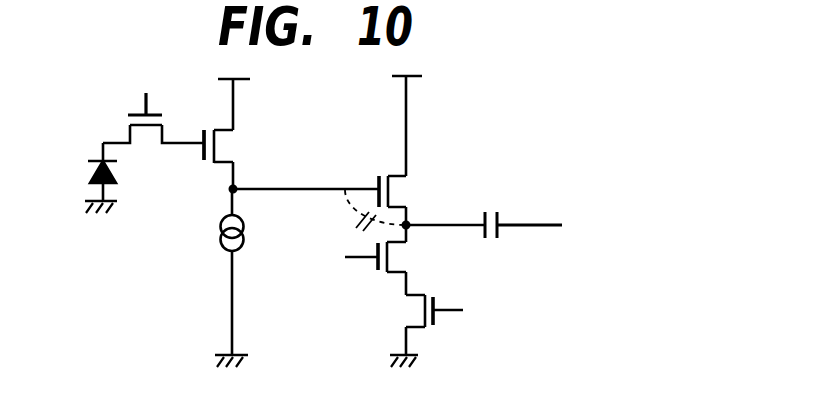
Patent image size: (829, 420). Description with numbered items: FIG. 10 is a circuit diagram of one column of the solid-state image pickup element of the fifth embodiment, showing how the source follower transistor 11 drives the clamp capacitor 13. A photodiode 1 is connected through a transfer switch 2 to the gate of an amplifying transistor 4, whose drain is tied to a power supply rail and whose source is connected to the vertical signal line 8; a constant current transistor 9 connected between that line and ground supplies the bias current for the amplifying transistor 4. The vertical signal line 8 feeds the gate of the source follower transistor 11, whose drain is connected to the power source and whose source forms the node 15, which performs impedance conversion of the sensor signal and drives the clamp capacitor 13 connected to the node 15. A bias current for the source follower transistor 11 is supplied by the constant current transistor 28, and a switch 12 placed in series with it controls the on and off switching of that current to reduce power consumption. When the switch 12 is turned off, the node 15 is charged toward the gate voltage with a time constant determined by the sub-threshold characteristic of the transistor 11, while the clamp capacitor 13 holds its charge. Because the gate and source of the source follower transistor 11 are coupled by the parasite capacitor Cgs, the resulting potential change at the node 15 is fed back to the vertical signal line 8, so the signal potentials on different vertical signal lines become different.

The photodiode 1 is at (118, 181).
The transfer switch 2 is at (146, 137).
The amplifying transistor 4 is at (229, 144).
The vertical signal line 8 is at (285, 191).
The constant current transistor 9 is at (221, 237).
The source follower transistor 11 is at (403, 189).
The switch 12 is at (378, 268).
The clamp capacitor 13 is at (492, 209).
The node 15 is at (447, 228).
The constant current transistor 28 is at (405, 315).
The parasite capacitor Cgs is at (360, 219).